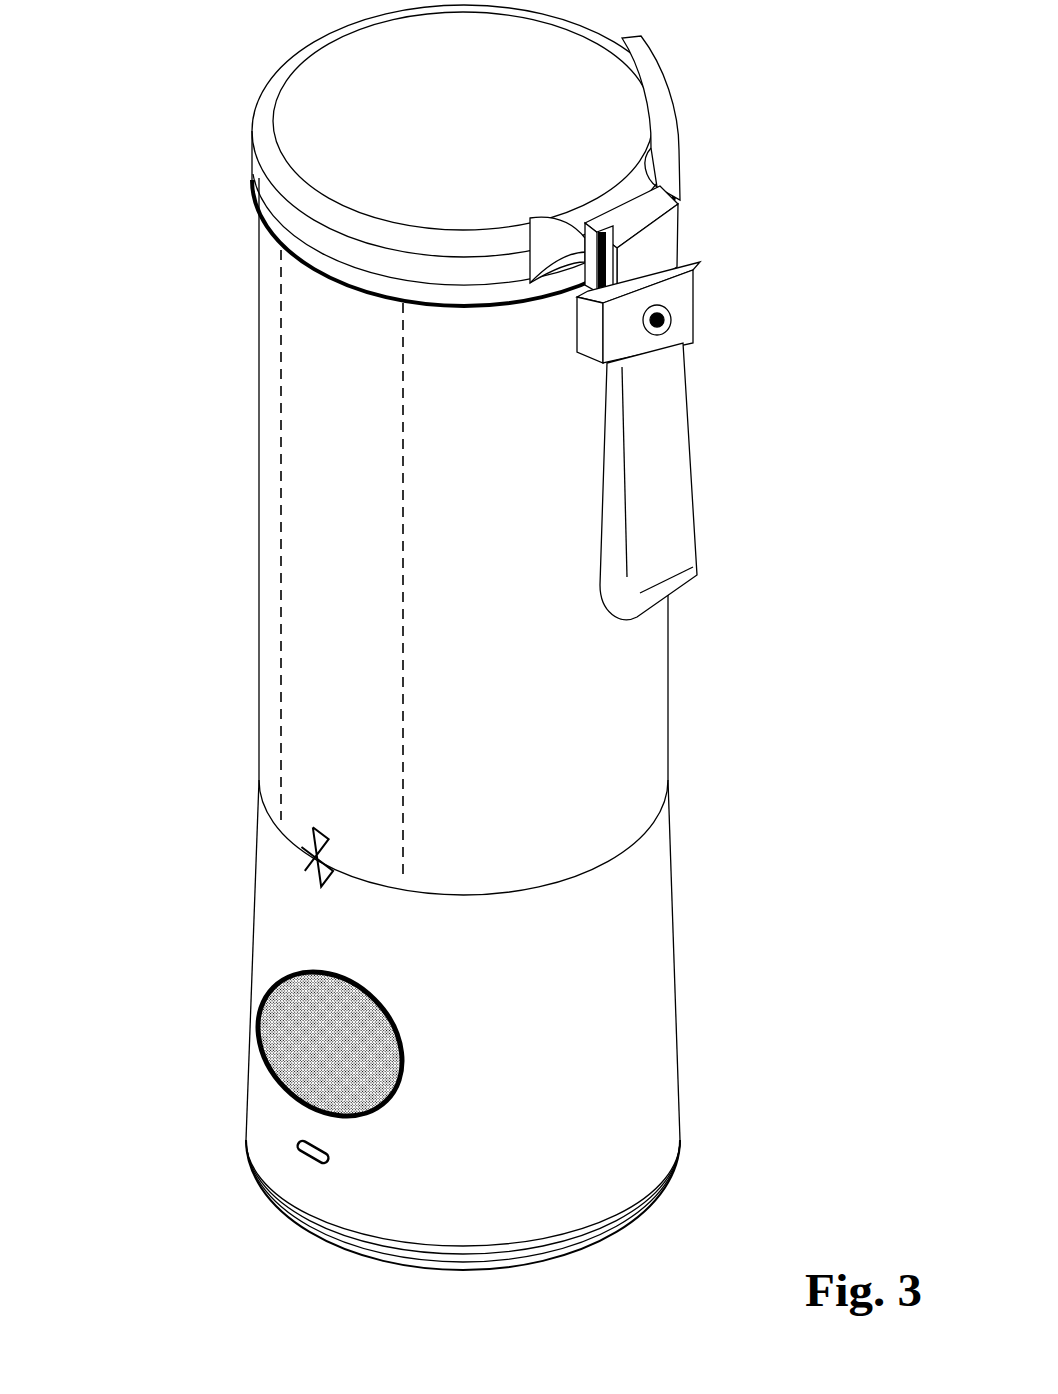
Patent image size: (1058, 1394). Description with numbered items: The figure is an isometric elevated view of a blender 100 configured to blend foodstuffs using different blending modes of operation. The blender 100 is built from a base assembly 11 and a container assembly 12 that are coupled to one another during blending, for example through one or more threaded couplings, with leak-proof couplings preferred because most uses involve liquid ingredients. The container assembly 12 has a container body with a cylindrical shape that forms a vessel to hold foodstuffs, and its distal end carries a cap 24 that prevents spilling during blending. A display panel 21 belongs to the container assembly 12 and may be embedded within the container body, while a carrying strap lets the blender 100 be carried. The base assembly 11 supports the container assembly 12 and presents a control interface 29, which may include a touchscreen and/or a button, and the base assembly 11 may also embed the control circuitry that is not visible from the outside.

The blender 100 is at (257, 40).
The cap 24 is at (498, 114).
The container assembly 12 is at (802, 671).
The display panel 21 is at (275, 643).
The base assembly 11 is at (795, 1008).
The control interface 29 is at (265, 1063).